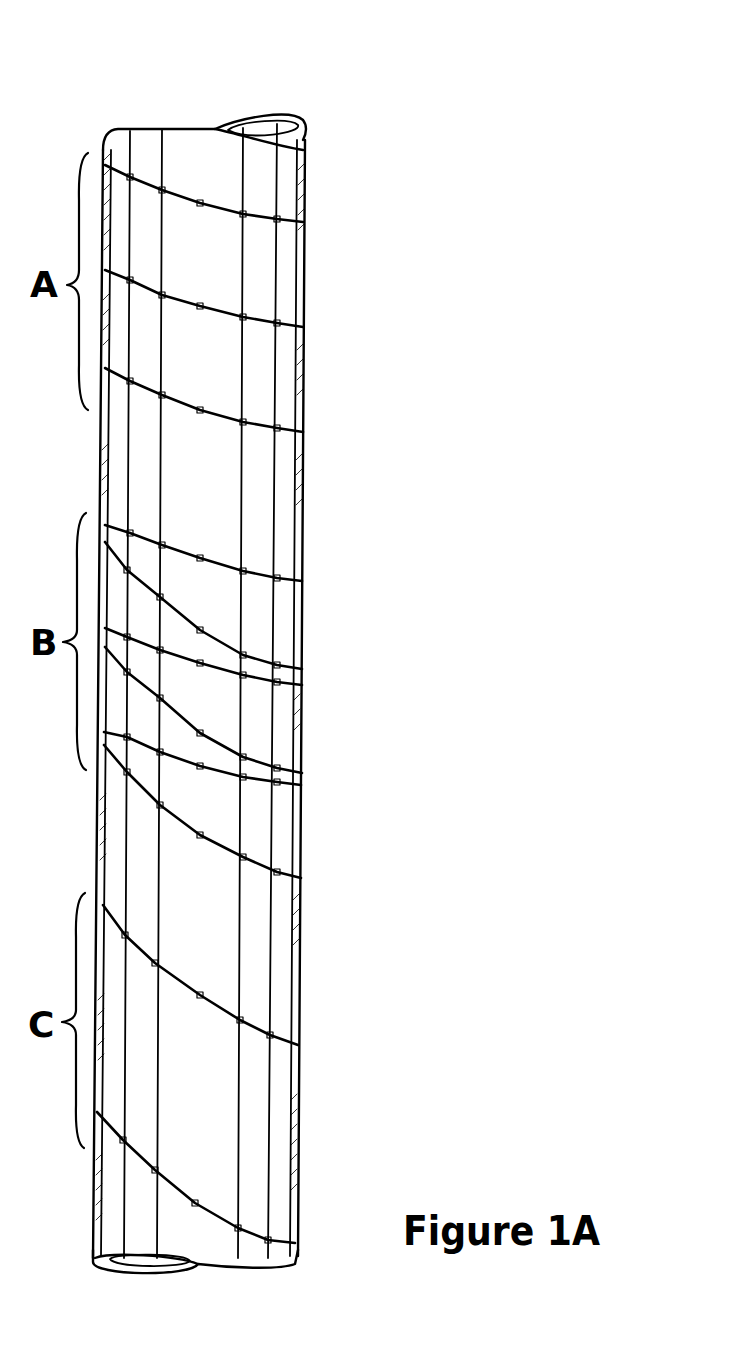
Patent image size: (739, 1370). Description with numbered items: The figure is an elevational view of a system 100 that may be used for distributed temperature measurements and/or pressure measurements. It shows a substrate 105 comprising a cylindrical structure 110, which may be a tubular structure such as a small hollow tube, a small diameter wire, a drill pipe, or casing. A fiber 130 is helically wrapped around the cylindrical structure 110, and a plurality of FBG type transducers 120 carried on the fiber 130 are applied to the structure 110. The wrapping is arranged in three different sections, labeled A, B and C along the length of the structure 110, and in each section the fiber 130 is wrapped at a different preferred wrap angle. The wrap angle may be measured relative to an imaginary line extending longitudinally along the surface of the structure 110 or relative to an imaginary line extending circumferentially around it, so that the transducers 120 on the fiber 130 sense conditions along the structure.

The system 100 is at (295, 646).
The substrate 105 is at (310, 640).
The cylindrical structure 110 is at (200, 112).
The FBG type transducers 120 is at (240, 418).
The fiber 130 is at (258, 215).